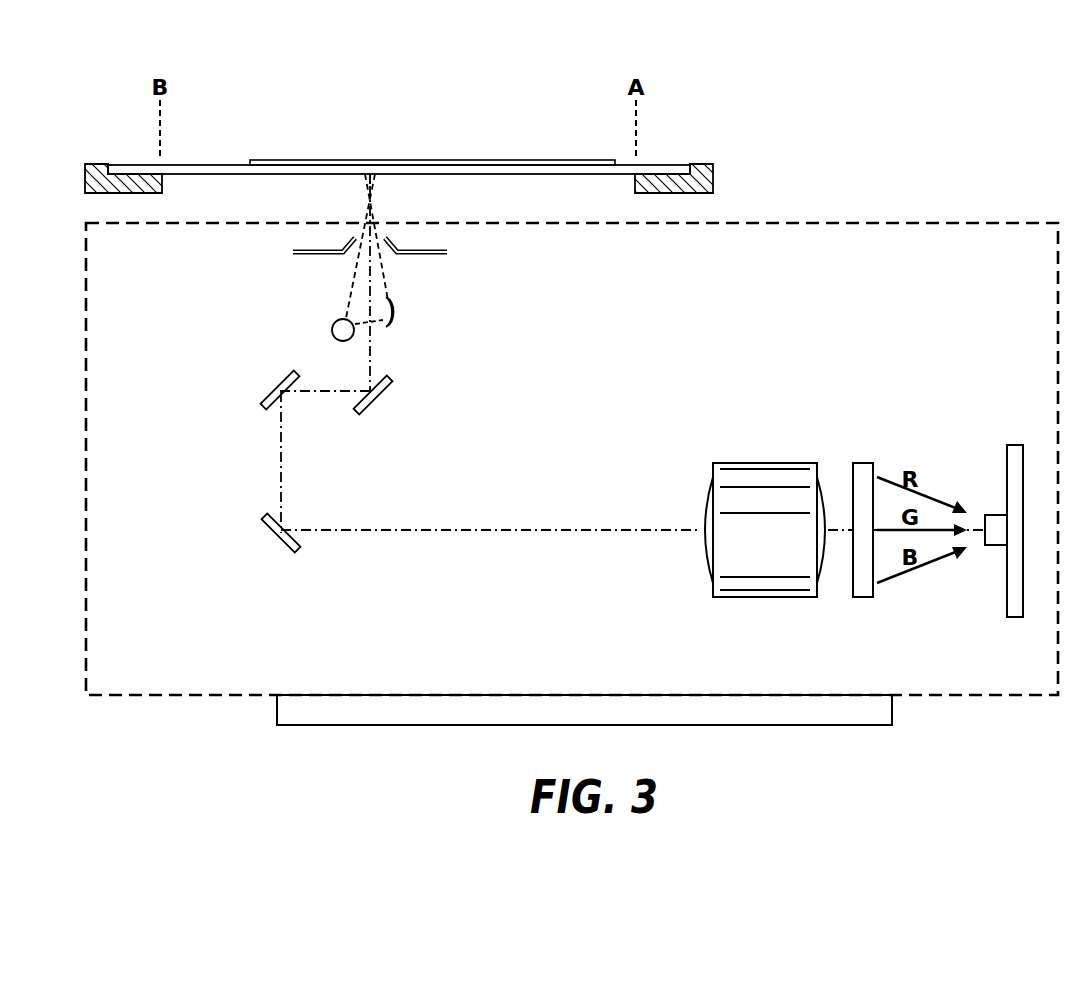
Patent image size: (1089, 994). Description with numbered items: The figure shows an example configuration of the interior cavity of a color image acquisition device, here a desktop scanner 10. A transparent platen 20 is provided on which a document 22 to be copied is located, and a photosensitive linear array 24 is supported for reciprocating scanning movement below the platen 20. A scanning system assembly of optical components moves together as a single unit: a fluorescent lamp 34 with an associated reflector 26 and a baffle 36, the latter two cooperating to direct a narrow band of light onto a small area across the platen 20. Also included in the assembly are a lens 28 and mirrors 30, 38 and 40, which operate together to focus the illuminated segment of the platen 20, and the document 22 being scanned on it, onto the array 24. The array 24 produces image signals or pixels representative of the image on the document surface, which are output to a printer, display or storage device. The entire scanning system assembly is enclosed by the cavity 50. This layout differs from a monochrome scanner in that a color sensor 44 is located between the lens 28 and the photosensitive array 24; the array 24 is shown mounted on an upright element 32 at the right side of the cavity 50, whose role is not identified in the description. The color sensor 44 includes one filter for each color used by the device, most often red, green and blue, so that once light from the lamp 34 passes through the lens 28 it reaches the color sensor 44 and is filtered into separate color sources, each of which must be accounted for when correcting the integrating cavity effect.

The desktop scanner 10 is at (913, 170).
The transparent platen 20 is at (213, 165).
The document 22 is at (385, 160).
The photosensitive linear array 24 is at (997, 547).
The reflector 26 is at (397, 312).
The lens 28 is at (768, 463).
The mirror 30 is at (278, 388).
The screen 32 is at (1012, 445).
The fluorescent lamp 34 is at (333, 327).
The baffle 36 is at (447, 253).
The mirror 38 is at (379, 397).
The mirror 40 is at (277, 533).
The color sensor 44 is at (865, 463).
The cavity 50 is at (967, 222).